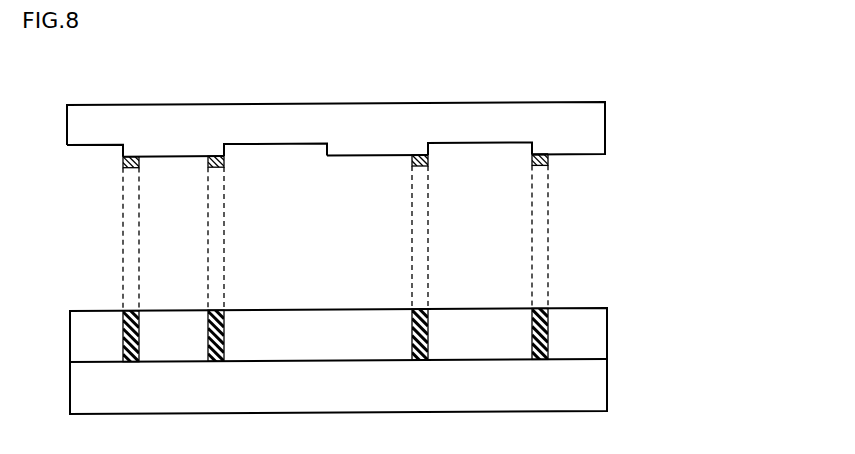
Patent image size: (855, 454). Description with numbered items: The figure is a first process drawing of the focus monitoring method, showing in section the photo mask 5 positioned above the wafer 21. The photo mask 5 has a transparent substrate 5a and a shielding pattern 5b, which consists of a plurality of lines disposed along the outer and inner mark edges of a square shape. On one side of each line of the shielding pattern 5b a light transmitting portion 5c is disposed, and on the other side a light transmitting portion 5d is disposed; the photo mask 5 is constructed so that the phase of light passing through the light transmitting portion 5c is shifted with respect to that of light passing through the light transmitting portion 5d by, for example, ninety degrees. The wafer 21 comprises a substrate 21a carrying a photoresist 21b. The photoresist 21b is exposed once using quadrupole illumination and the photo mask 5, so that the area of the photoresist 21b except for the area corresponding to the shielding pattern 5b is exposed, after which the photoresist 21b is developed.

The photo mask 5 is at (364, 123).
The transparent substrate 5a is at (593, 129).
The shielding pattern 5b is at (123, 170).
The light transmitting portion 5c is at (97, 142).
The light transmitting portion 5d is at (170, 156).
The wafer 21 is at (384, 353).
The substrate of wafer 21a is at (364, 386).
The photoresist 21b is at (597, 335).